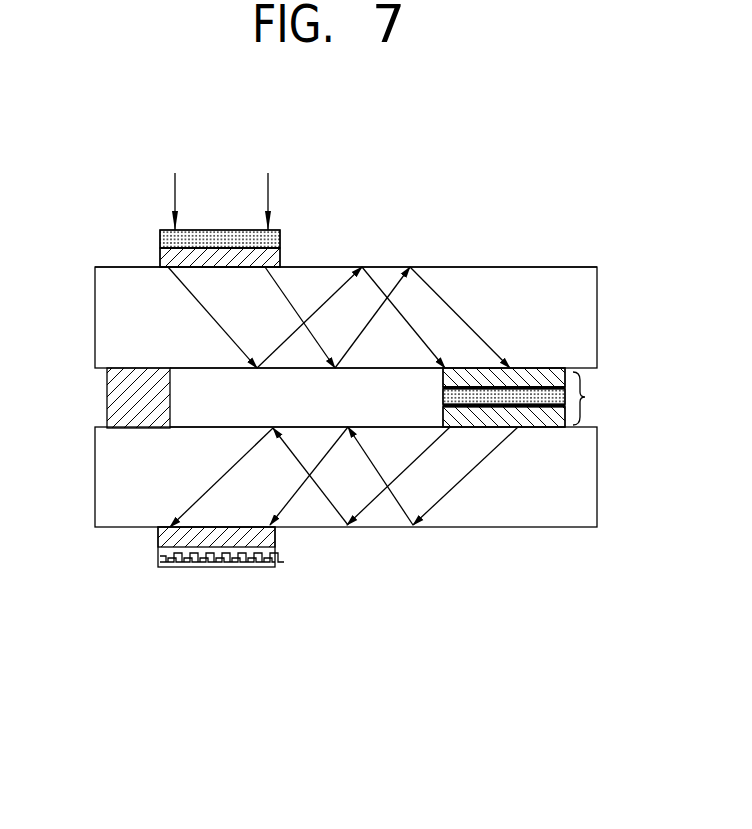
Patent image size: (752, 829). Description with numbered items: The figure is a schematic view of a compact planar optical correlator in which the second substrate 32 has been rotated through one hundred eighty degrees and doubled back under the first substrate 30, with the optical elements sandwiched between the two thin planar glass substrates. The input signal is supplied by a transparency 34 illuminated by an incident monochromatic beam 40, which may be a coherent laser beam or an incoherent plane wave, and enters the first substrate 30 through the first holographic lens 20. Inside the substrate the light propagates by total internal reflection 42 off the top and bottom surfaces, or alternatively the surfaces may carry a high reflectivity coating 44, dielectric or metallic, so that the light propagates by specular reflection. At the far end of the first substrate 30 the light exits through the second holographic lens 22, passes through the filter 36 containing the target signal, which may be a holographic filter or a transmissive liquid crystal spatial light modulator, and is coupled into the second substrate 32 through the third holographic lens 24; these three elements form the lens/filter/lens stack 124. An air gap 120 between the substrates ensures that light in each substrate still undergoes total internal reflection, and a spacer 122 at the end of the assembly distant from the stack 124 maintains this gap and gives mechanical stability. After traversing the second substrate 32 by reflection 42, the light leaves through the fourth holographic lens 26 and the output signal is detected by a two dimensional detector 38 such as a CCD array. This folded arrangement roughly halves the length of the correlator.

The first holographic lens 20 is at (158, 260).
The transparency 34 is at (282, 238).
The incident monochromatic beam 40 is at (267, 200).
The high reflectivity coating 44 is at (502, 266).
The first substrate 30 is at (143, 335).
The total internal reflection 42 is at (267, 280).
The second holographic lens 22 is at (552, 372).
The filter 36 is at (442, 397).
The third holographic lens 24 is at (548, 415).
The lens/filter/lens stack 124 is at (588, 395).
The spacer 122 is at (111, 393).
The air gap 120 is at (282, 413).
The second substrate 32 is at (138, 493).
The fourth holographic lens 26 is at (277, 538).
The two dimensional detector 38 is at (158, 558).